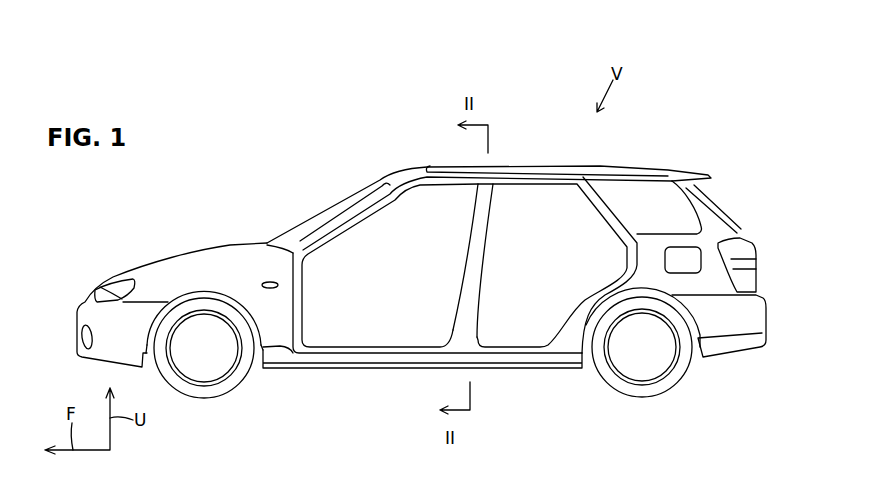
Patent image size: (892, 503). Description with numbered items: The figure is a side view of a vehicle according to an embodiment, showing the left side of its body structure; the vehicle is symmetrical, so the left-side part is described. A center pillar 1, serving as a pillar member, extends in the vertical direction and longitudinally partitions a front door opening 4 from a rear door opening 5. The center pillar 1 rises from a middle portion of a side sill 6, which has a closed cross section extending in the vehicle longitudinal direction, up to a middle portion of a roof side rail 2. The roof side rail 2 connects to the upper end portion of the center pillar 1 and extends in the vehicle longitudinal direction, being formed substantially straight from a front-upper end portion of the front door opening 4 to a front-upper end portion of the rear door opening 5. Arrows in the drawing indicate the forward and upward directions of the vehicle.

The center pillar 1 is at (498, 222).
The roof side rail 2 is at (537, 159).
The front door opening 4 is at (396, 284).
The rear door opening 5 is at (548, 284).
The side sill 6 is at (515, 374).